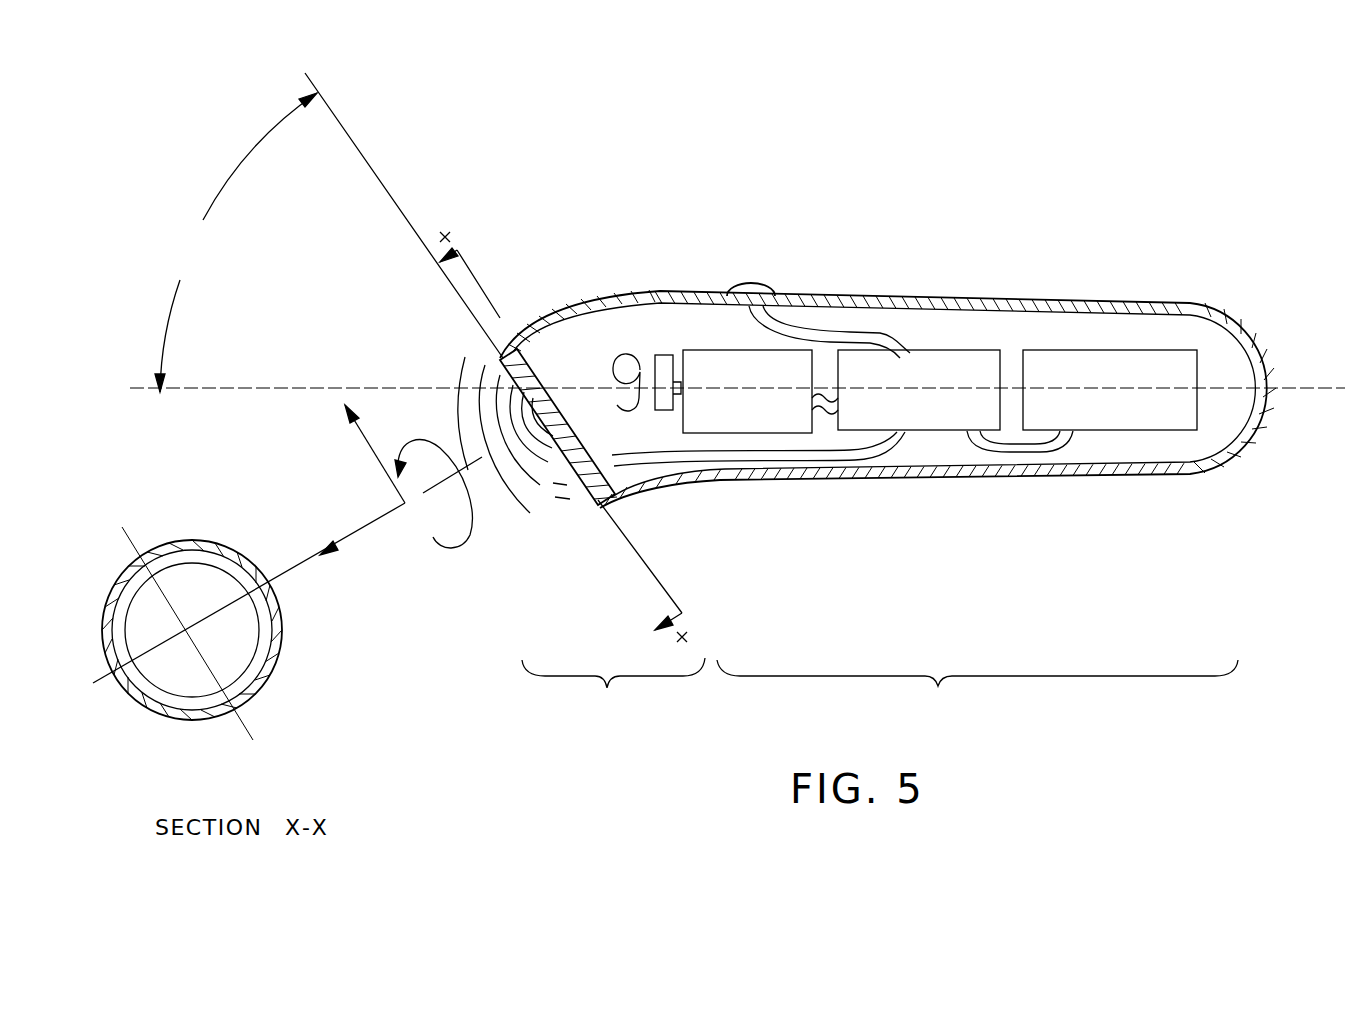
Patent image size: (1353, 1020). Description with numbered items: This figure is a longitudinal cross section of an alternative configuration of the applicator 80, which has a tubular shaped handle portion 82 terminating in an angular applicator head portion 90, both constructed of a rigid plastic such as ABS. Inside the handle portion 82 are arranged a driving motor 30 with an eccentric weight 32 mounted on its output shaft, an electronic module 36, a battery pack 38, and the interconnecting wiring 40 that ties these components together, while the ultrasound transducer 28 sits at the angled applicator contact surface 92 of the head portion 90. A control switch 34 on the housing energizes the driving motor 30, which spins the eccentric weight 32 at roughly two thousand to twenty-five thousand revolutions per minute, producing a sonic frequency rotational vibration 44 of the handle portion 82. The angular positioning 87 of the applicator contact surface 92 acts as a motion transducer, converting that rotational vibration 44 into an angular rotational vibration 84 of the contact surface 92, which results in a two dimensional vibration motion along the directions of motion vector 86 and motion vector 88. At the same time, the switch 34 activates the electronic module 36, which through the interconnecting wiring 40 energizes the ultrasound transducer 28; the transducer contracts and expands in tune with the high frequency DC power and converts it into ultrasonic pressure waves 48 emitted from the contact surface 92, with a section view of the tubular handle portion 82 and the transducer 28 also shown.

The ultrasound transducer 28 is at (572, 480).
The driving motor 30 is at (737, 367).
The eccentric weight 32 is at (667, 353).
The control switch 34 is at (750, 285).
The electronic module 36 is at (923, 363).
The battery pack 38 is at (1092, 367).
The interconnecting wiring 40 is at (820, 330).
The rotational vibration 44 is at (617, 383).
The ultrasonic pressure waves 48 is at (458, 414).
The applicator 80 is at (1008, 213).
The handle portion 82 is at (203, 722).
The angular rotational vibration 84 is at (453, 547).
The motion vector 86 is at (249, 593).
The angular positioning 87 is at (236, 242).
The motion vector 88 is at (351, 454).
The applicator head portion 90 is at (613, 694).
The applicator contact surface 92 is at (403, 213).